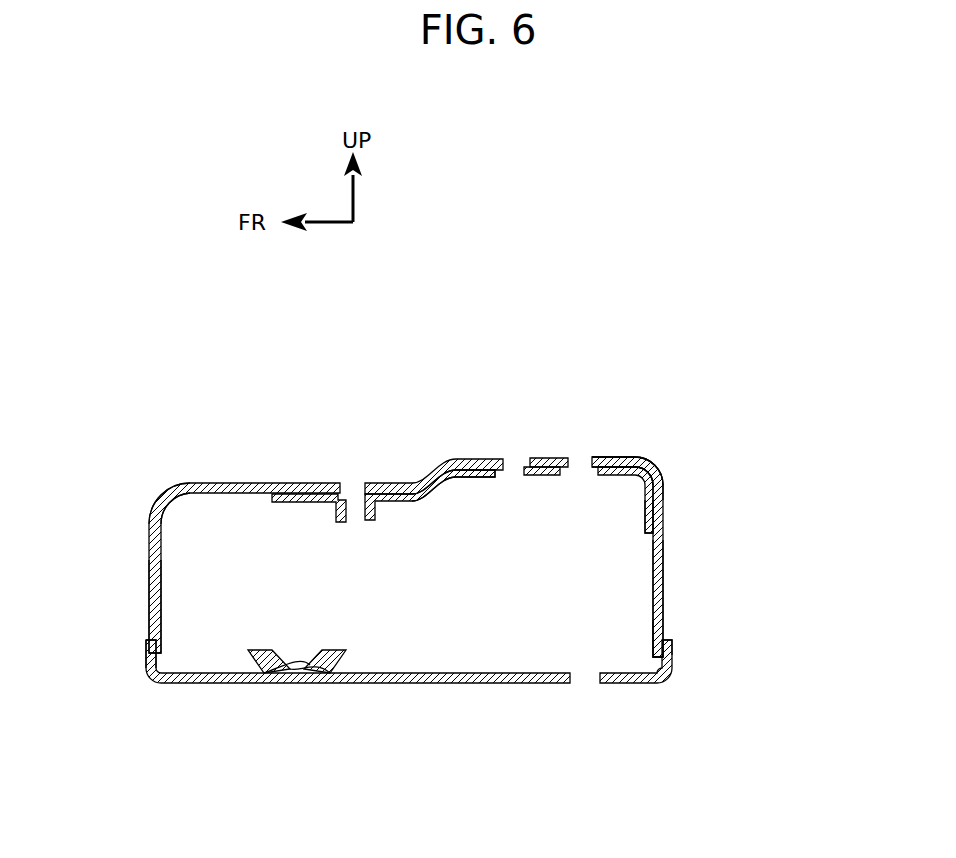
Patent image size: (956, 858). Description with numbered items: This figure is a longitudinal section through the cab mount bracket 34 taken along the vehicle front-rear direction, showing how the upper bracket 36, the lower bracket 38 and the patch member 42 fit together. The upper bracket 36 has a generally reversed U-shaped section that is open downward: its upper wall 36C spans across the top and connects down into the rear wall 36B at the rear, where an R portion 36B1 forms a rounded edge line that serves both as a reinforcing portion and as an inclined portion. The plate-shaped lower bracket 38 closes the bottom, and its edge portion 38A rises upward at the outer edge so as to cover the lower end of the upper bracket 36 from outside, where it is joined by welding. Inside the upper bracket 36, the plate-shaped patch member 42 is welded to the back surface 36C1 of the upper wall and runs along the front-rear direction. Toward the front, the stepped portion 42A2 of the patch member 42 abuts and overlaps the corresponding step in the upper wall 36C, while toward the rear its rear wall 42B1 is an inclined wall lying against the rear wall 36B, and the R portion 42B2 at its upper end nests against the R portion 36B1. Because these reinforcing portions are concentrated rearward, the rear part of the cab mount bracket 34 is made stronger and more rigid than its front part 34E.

The cab mount bracket 34 is at (590, 354).
The upper bracket 36 is at (624, 452).
The rear wall 36B is at (663, 605).
The R portion 36B1 is at (650, 461).
The upper wall 36C is at (227, 490).
The back surface 36C1 is at (218, 494).
The front part 34E is at (445, 495).
The lower bracket 38 is at (636, 692).
The edge portion 38A is at (147, 652).
The patch member 42 is at (474, 485).
The stepped portion 42A2 is at (410, 490).
The rear wall 42B1 is at (645, 521).
The R portion 42B2 is at (656, 490).